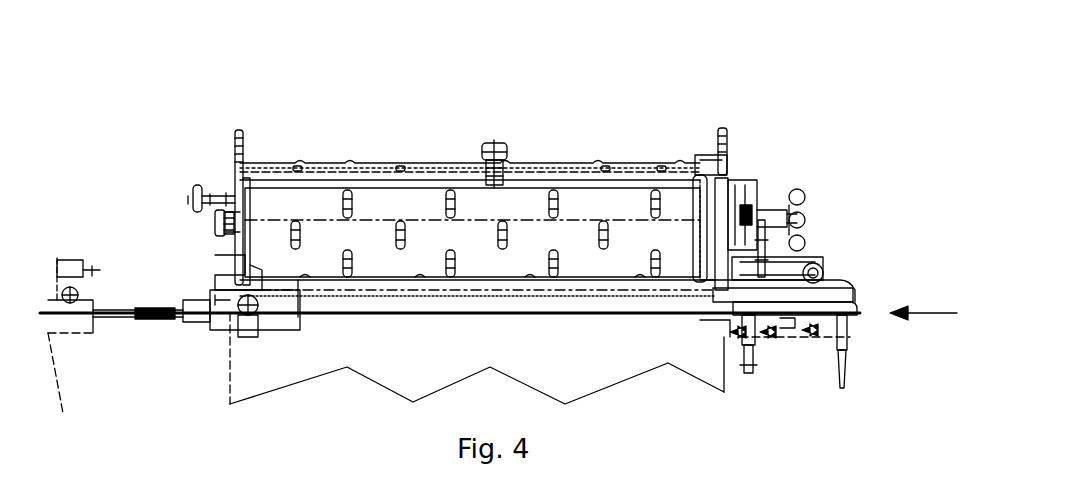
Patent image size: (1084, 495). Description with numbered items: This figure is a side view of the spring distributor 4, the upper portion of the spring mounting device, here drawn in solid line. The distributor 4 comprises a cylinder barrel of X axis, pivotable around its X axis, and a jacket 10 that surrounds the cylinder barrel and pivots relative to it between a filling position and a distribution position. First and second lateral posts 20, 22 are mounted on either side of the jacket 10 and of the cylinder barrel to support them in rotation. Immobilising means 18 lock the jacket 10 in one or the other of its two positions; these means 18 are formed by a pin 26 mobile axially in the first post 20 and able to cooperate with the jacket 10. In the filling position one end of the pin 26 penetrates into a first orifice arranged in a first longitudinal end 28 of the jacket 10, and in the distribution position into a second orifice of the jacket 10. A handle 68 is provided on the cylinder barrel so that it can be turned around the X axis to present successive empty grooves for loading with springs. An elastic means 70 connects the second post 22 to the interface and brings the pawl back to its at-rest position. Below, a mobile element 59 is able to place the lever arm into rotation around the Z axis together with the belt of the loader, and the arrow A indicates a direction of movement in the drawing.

The spring distributor 4 is at (632, 153).
The jacket 10 is at (367, 180).
The immobilising means 18 is at (185, 198).
The first lateral post 20 is at (227, 168).
The second lateral post 22 is at (700, 156).
The pin 26 is at (212, 192).
The first longitudinal end 28 is at (236, 242).
The mobile element 59 is at (842, 273).
The handle 68 is at (723, 127).
The elastic means 70 is at (738, 182).
The X axis X is at (213, 220).
The direction A is at (923, 301).